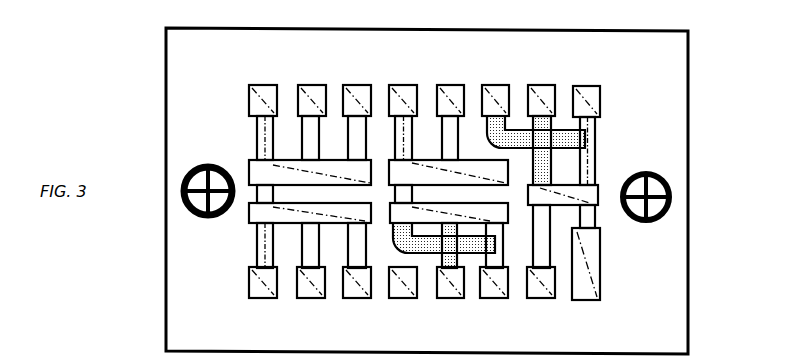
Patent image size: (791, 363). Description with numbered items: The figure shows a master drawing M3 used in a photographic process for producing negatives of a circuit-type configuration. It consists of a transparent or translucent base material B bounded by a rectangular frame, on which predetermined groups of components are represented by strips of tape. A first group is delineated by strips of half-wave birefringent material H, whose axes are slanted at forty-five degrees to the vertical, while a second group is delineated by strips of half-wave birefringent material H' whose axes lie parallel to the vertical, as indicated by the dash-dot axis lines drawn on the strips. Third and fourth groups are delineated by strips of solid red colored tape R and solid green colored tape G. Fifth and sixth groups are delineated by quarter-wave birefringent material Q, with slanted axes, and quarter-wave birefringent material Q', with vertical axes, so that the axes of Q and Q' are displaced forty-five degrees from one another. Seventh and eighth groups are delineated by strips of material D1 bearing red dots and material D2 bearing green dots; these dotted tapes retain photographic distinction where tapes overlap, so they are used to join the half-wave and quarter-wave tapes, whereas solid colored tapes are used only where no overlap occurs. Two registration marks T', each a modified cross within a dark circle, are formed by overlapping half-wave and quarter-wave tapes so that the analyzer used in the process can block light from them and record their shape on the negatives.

The base material B is at (688, 98).
The master drawing M3 is at (150, 82).
The half-wave birefringent material H is at (434, 131).
The half-wave birefringent material H' is at (428, 150).
The red colored material R is at (301, 137).
The green colored material G is at (367, 135).
The red dotted material D1 is at (552, 165).
The green dotted material D2 is at (384, 247).
The quarter-wave birefringent material Q is at (423, 251).
The quarter-wave birefringent material Q' is at (250, 245).
The registration marks T' is at (426, 180).